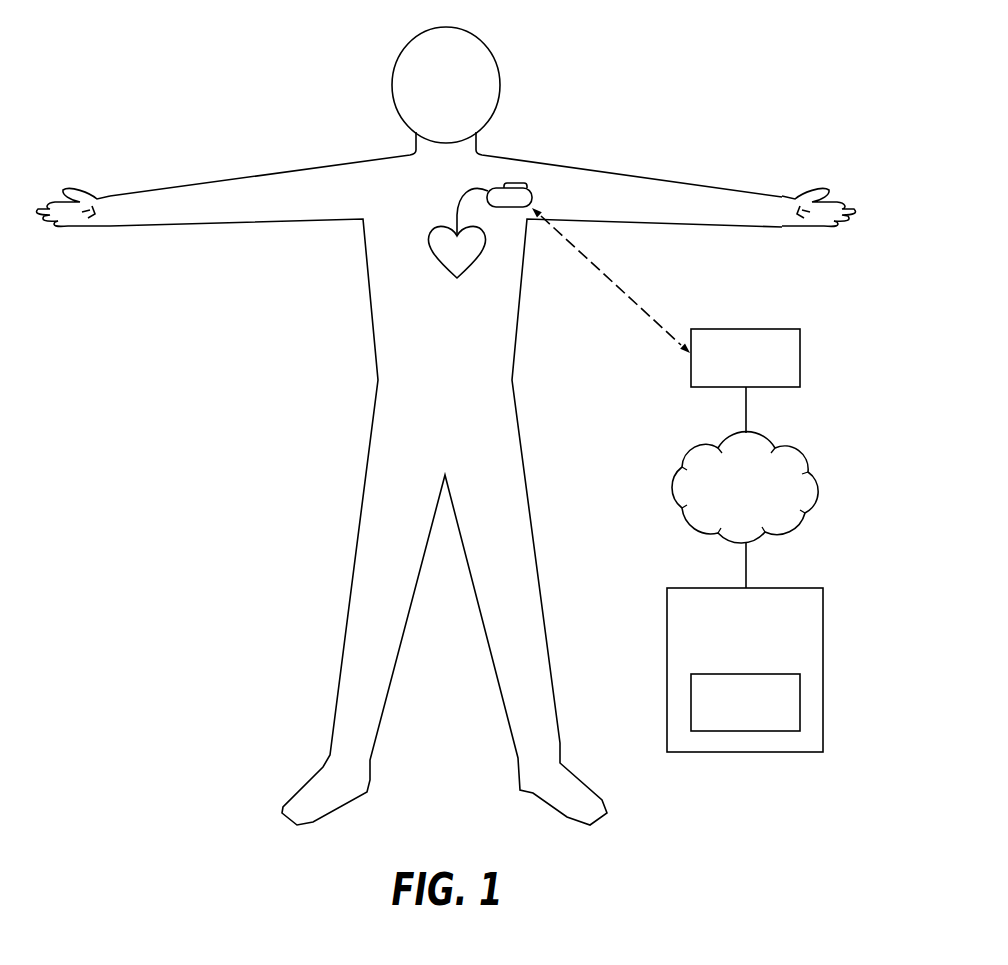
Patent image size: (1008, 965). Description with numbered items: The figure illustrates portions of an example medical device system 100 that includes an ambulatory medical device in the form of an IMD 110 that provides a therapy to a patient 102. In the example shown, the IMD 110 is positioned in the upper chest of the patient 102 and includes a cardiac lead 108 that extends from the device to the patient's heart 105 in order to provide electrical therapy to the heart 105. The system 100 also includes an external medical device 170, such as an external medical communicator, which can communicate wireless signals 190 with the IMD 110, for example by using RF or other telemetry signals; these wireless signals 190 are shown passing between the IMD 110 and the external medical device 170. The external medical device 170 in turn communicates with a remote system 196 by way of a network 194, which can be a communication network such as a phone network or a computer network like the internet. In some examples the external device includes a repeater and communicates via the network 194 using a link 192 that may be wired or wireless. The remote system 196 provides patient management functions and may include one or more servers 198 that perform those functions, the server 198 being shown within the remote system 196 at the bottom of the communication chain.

The medical device system 100 is at (750, 45).
The patient 102 is at (369, 297).
The heart 105 is at (437, 262).
The cardiac lead 108 is at (463, 194).
The IMD 110 is at (511, 183).
The external medical device 170 is at (747, 328).
The wireless signals 190 is at (604, 278).
The link 192 is at (748, 408).
The network 194 is at (818, 486).
The remote system 196 is at (768, 588).
The server 198 is at (745, 674).